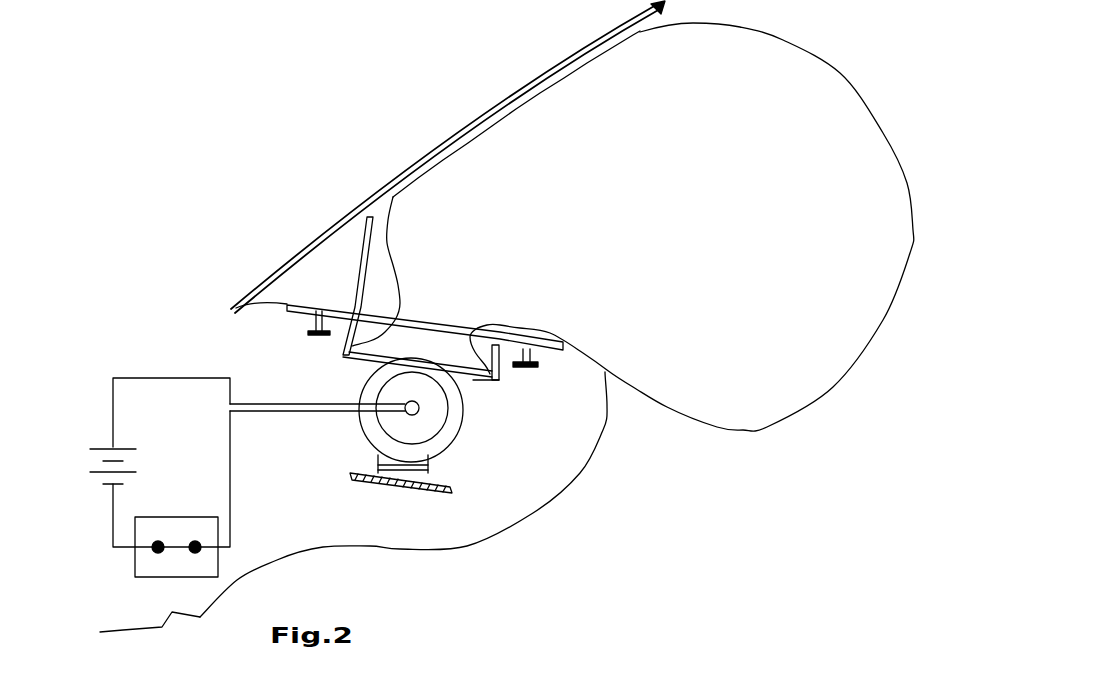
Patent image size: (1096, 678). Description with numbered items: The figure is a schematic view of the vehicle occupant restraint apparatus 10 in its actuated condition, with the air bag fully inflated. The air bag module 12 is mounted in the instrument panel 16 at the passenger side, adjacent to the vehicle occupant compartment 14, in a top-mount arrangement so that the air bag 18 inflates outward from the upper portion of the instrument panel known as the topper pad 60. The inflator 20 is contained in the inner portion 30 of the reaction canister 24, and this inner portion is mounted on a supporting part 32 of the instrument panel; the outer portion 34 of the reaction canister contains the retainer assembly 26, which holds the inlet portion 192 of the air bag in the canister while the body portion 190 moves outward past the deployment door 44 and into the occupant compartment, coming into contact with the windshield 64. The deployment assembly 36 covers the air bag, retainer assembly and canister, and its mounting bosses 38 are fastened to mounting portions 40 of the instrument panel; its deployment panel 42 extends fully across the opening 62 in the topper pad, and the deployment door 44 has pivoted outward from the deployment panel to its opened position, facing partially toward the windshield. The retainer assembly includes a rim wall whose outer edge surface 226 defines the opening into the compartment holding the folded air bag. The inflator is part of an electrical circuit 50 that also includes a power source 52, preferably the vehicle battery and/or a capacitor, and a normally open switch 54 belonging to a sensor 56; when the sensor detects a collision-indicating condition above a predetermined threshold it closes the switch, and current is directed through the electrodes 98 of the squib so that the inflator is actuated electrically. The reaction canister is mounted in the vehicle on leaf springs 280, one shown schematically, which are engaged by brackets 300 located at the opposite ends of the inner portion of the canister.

The vehicle occupant restraint apparatus 10 is at (185, 268).
The air bag module 12 is at (548, 455).
The vehicle occupant compartment 14 is at (846, 509).
The instrument panel 16 is at (605, 437).
The air bag 18 is at (758, 430).
The inflator 20 is at (367, 381).
The reaction canister 24 is at (443, 457).
The retainer assembly 26 is at (472, 378).
The inner portion 30 is at (362, 434).
The supporting part 32 is at (348, 480).
The outer portion 34 is at (347, 343).
The deployment assembly 36 is at (517, 333).
The mounting bosses 38 is at (332, 310).
The mounting portions 40 is at (310, 332).
The deployment panel 42 is at (412, 318).
The deployment door 44 is at (377, 262).
The electrical circuit 50 is at (150, 352).
The power source 52 is at (105, 440).
The switch 54 is at (182, 552).
The sensor 56 is at (220, 563).
The topper pad 60 is at (607, 372).
The opening 62 is at (575, 330).
The windshield 64 is at (357, 197).
The electrodes 98 is at (460, 373).
The body portion 190 is at (785, 40).
The inlet portion 192 is at (467, 326).
The outer edge surface 226 is at (445, 361).
The leaf springs 280 is at (415, 478).
The brackets 300 is at (373, 465).